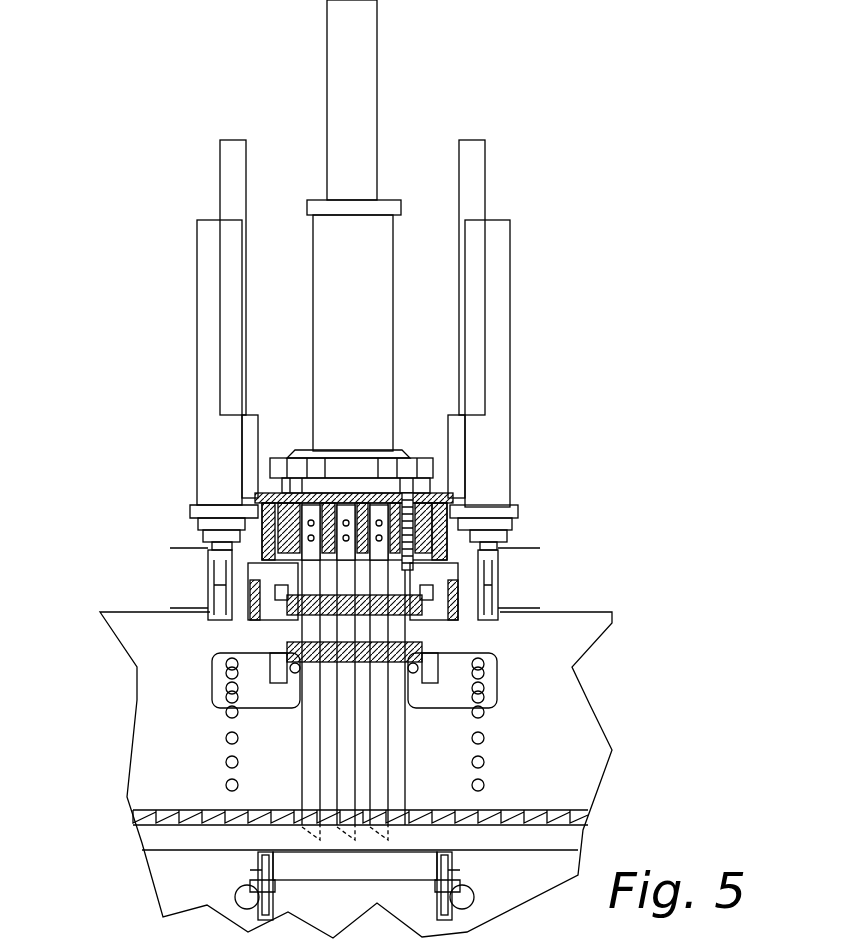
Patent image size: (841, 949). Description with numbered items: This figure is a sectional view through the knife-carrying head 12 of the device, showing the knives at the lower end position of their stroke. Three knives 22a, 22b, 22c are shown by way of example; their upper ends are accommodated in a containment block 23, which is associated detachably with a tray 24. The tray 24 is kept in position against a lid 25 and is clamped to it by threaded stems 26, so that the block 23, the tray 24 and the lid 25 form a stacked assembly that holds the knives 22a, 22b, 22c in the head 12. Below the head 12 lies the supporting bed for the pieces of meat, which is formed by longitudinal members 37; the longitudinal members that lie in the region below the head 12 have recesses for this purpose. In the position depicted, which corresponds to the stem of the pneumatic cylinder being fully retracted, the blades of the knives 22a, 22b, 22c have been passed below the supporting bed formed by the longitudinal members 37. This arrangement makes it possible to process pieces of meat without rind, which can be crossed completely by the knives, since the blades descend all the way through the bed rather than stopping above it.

The head 12 is at (515, 383).
The knife 22a is at (310, 747).
The knife 22b is at (345, 790).
The knife 22c is at (405, 768).
The containment block 23 is at (257, 513).
The tray 24 is at (257, 547).
The lid 25 is at (452, 497).
The threaded stems 26 is at (415, 485).
The longitudinal members 37 is at (567, 813).